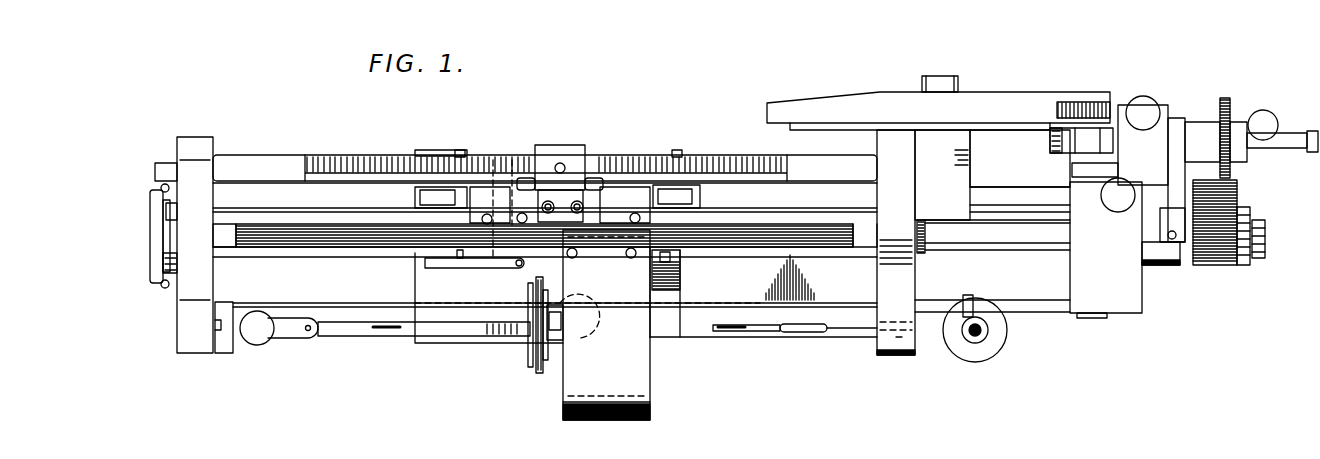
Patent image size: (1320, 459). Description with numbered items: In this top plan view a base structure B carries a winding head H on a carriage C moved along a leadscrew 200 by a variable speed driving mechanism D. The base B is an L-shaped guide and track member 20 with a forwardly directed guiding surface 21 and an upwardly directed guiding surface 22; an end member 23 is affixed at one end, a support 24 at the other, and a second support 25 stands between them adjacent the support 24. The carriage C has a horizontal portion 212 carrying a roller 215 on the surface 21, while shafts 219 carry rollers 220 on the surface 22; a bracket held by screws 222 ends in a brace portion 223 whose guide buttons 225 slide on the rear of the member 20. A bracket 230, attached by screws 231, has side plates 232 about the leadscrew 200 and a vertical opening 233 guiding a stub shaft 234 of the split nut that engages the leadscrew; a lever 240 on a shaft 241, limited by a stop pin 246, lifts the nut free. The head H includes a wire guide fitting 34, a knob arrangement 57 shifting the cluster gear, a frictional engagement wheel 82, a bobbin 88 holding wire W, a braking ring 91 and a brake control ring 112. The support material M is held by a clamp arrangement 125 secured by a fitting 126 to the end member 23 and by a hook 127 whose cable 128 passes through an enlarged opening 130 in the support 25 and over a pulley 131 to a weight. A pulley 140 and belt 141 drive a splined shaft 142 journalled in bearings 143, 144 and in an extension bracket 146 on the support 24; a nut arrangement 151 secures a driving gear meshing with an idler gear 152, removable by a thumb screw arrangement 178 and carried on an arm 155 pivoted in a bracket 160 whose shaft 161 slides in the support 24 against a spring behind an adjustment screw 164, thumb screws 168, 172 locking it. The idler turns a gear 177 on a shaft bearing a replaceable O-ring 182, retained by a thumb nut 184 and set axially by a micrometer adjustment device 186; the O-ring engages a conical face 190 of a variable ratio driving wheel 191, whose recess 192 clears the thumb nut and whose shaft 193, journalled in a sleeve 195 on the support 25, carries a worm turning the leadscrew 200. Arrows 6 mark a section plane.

The frame section 20 is at (997, 230).
The rod 21 is at (1020, 302).
The housing bar 22 is at (1022, 187).
The end plate 23 is at (177, 307).
The bracket block 24 is at (1142, 305).
The frame column 25 is at (880, 279).
The hub 34 is at (530, 315).
The block 57 is at (672, 271).
The hub piece 82 is at (572, 316).
The pulley flange 88 is at (528, 351).
The pulley disc 91 is at (543, 374).
The carriage block 112 is at (566, 260).
The handle 125 is at (292, 338).
The handle block 126 is at (225, 353).
The rod joint 127 is at (796, 332).
The rod 128 is at (844, 331).
The frame foot 130 is at (900, 350).
The wheel hub 131 is at (972, 340).
The bar 140 is at (163, 235).
The nut 141 is at (158, 180).
The rail 142 is at (287, 248).
The block 143 is at (170, 262).
The strip 144 is at (922, 252).
The lower plate 146 is at (1165, 265).
The knob 151 is at (1265, 251).
The knurled knob 152 is at (1238, 190).
The plate 155 is at (1168, 185).
The bracket 160 is at (1143, 145).
The ledge 161 is at (1072, 178).
The tab 164 is at (1092, 318).
The knob 168 is at (1112, 208).
The knob 172 is at (1146, 100).
The rack 177 is at (1225, 98).
The knurled nut 178 is at (1250, 209).
The gear 182 is at (1111, 101).
The block 184 is at (1050, 152).
The lever 186 is at (1278, 128).
The table 190 is at (790, 125).
The knob 191 is at (1000, 100).
The bracket 192 is at (937, 304).
The wheel 193 is at (990, 354).
The block 195 is at (968, 147).
The threaded shaft 200 is at (330, 155).
The housing 212 is at (682, 328).
The circle 215 is at (590, 345).
The pin 219 is at (460, 150).
The block 220 is at (415, 199).
The plate 222 is at (606, 217).
The thread 223 is at (478, 153).
The plate 225 is at (423, 150).
The bracket arm 230 is at (589, 160).
The bracket 231 is at (560, 183).
The ear 232 is at (535, 158).
The screw 233 is at (558, 163).
The screw head 234 is at (564, 163).
The bar 240 is at (477, 268).
The plate 241 is at (498, 208).
The tab 246 is at (458, 260).
The base B is at (347, 312).
The carriage C is at (484, 342).
The drive D is at (1072, 80).
The head H is at (666, 370).
The rod M is at (439, 327).
The wheel W is at (518, 384).
The section line 6 is at (387, 338).